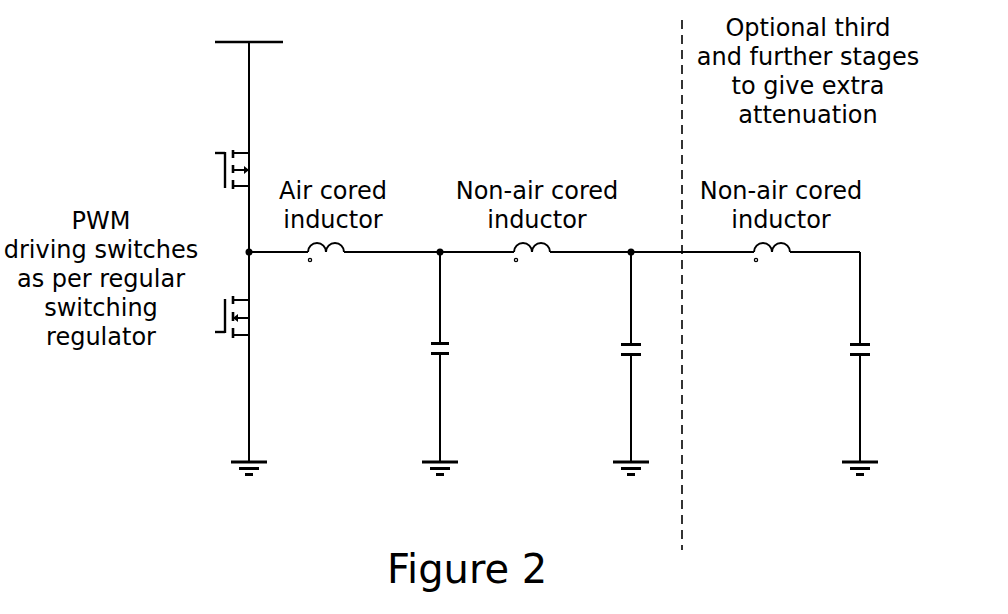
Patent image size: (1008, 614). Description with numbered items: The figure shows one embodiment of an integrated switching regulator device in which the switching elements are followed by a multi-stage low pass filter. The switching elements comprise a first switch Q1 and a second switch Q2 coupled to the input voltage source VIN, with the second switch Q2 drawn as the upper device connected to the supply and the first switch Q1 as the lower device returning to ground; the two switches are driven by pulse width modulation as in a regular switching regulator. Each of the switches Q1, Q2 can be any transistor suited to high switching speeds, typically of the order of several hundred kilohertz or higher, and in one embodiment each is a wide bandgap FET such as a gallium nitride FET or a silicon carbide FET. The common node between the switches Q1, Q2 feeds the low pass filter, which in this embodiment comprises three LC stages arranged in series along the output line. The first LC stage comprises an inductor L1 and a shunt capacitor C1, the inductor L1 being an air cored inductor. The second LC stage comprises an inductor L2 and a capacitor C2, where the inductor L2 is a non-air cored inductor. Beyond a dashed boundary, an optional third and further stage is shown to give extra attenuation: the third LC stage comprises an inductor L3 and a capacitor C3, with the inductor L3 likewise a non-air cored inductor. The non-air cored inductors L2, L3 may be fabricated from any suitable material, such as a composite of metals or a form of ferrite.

The input voltage supply VIN is at (235, 75).
The second switch Q2 is at (228, 201).
The first switch Q1 is at (228, 357).
The inductor L1 is at (326, 269).
The inductor L2 is at (532, 269).
The inductor L3 is at (772, 269).
The capacitor C1 is at (461, 357).
The capacitor C2 is at (649, 357).
The capacitor C3 is at (878, 357).